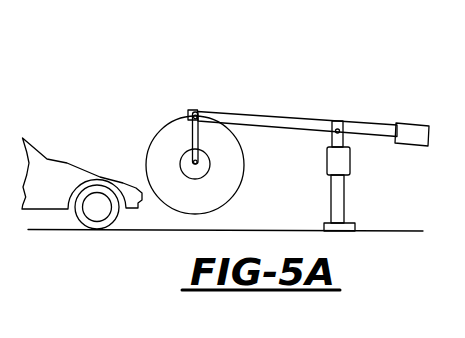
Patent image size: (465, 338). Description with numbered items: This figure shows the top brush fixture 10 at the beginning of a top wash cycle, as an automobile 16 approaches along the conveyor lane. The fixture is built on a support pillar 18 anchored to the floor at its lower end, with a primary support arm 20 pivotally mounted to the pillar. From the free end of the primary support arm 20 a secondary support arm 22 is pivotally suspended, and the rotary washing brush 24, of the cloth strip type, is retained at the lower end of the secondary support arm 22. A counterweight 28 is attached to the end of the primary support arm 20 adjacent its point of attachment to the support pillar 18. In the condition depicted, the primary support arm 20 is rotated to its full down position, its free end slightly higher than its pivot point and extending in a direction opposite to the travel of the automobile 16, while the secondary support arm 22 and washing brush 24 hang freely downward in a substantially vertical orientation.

The top brush fixture 10 is at (335, 92).
The automobile 16 is at (61, 164).
The support pillar 18 is at (343, 197).
The primary support arm 20 is at (276, 117).
The secondary support arm 22 is at (200, 139).
The rotary washing brush 24 is at (167, 138).
The counterweight 28 is at (413, 125).